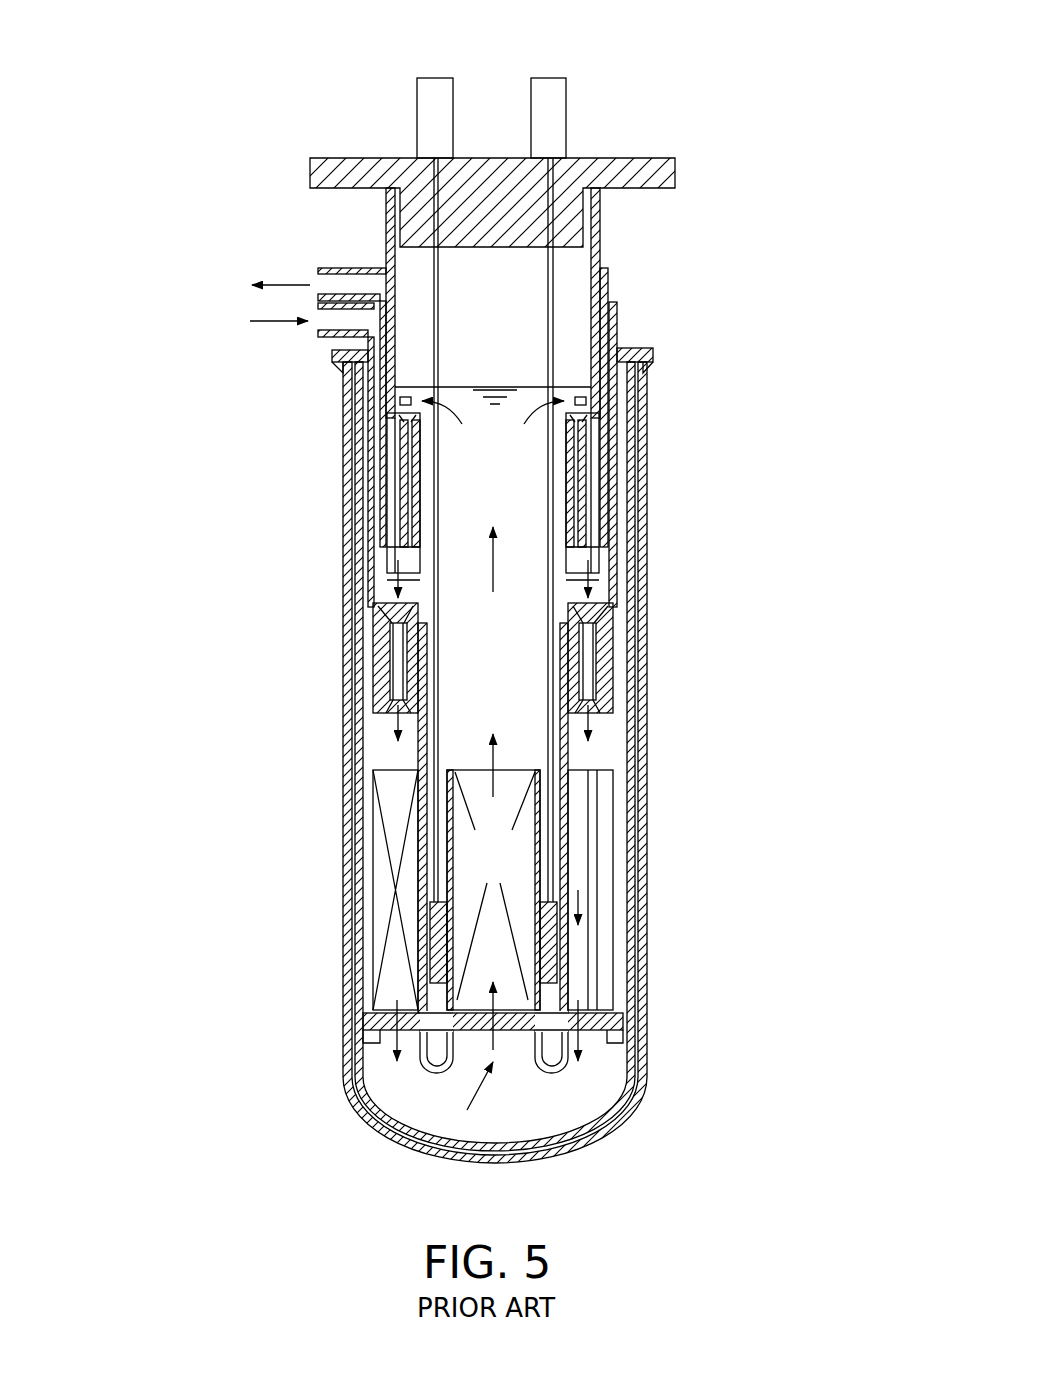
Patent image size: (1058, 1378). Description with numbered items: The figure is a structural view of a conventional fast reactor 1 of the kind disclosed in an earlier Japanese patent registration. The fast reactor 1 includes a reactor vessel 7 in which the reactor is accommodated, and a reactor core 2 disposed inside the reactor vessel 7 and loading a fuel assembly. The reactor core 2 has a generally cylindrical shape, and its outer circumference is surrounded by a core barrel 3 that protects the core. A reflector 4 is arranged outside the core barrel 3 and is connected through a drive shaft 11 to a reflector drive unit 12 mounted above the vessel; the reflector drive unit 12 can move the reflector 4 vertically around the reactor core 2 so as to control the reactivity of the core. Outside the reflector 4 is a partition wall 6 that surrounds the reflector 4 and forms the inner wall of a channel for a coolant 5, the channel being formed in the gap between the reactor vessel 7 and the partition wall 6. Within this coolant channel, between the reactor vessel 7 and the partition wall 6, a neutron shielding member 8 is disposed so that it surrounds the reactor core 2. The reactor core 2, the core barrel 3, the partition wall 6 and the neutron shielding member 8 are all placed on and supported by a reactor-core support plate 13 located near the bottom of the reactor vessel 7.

The fast reactor 1 is at (770, 75).
The reactor core 2 is at (512, 772).
The core barrel 3 is at (455, 772).
The reflector 4 is at (440, 933).
The coolant 5 is at (377, 745).
The partition wall 6 is at (427, 665).
The reactor vessel 7 is at (360, 789).
The neutron shielding member 8 is at (383, 955).
The drive shaft 11 is at (440, 507).
The reflector drive unit 12 is at (433, 86).
The reactor-core support plate 13 is at (510, 1033).